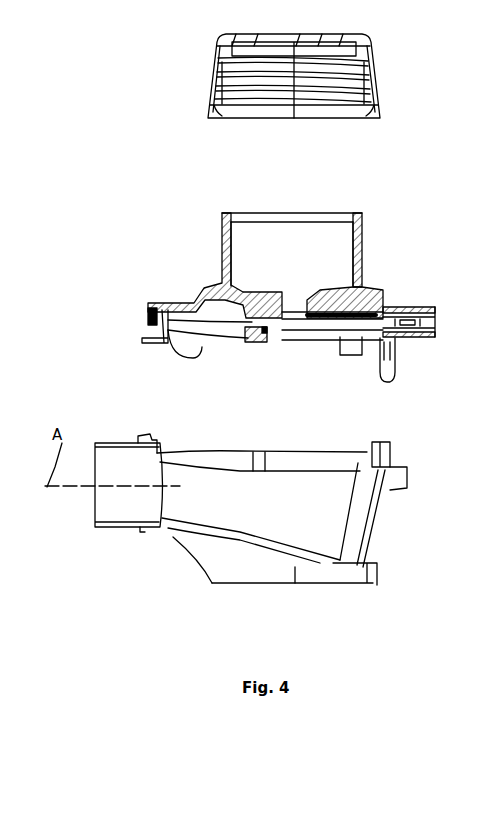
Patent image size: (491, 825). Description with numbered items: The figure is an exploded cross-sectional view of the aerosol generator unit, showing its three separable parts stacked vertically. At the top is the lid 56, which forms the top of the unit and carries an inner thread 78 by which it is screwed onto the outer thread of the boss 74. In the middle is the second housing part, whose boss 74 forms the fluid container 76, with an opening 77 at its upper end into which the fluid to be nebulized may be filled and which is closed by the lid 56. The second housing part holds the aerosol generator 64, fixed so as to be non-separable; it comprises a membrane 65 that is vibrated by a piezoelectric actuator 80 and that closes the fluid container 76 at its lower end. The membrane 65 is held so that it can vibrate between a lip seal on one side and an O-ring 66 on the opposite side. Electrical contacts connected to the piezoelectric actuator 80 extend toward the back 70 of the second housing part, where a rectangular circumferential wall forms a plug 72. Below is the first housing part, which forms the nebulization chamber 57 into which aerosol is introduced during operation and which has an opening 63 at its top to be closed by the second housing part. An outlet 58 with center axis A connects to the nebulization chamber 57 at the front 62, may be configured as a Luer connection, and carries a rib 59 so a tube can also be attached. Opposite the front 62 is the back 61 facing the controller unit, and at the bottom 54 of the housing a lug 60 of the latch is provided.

The bottom 54 is at (256, 590).
The lid 56 is at (207, 100).
The nebulization chamber 57 is at (320, 513).
The outlet 58 is at (122, 503).
The rib 59 is at (140, 442).
The lug 60 is at (393, 377).
The back 61 is at (383, 515).
The front 62 is at (162, 543).
The opening 63 is at (290, 447).
The aerosol generator 64 is at (250, 340).
The membrane 65 is at (293, 323).
The O-ring 66 is at (260, 347).
The back 70 is at (418, 290).
The plug 72 is at (433, 306).
The boss 74 is at (363, 222).
The fluid container 76 is at (316, 240).
The opening 77 is at (245, 216).
The inner thread 78 is at (254, 103).
The piezoelectric actuator 80 is at (345, 312).